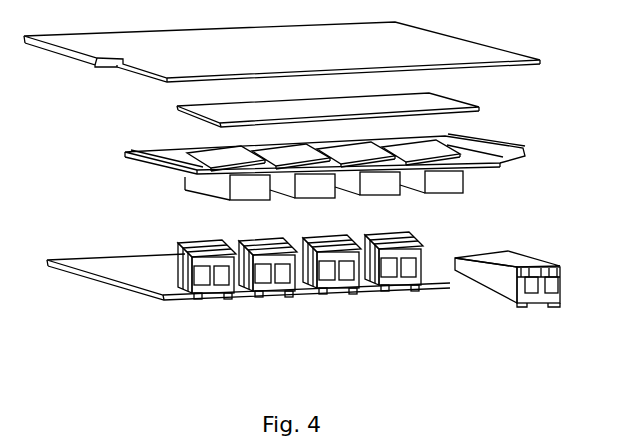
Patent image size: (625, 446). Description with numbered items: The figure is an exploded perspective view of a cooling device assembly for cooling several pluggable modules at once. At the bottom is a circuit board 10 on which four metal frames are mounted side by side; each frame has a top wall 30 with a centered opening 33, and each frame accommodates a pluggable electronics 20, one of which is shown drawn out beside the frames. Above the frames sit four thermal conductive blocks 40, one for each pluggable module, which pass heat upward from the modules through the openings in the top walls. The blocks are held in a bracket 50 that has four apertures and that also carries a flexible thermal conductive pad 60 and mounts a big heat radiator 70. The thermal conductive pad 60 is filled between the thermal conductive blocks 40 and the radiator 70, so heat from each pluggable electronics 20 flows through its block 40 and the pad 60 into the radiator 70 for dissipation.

The circuit board 10 is at (108, 265).
The pluggable electronics 20 is at (517, 257).
The top wall 30 is at (187, 253).
The centered opening 33 is at (210, 240).
The thermal conductive block 40 is at (200, 188).
The bracket 50 is at (497, 140).
The thermal conductive pad 60 is at (459, 98).
The heat radiator 70 is at (427, 40).